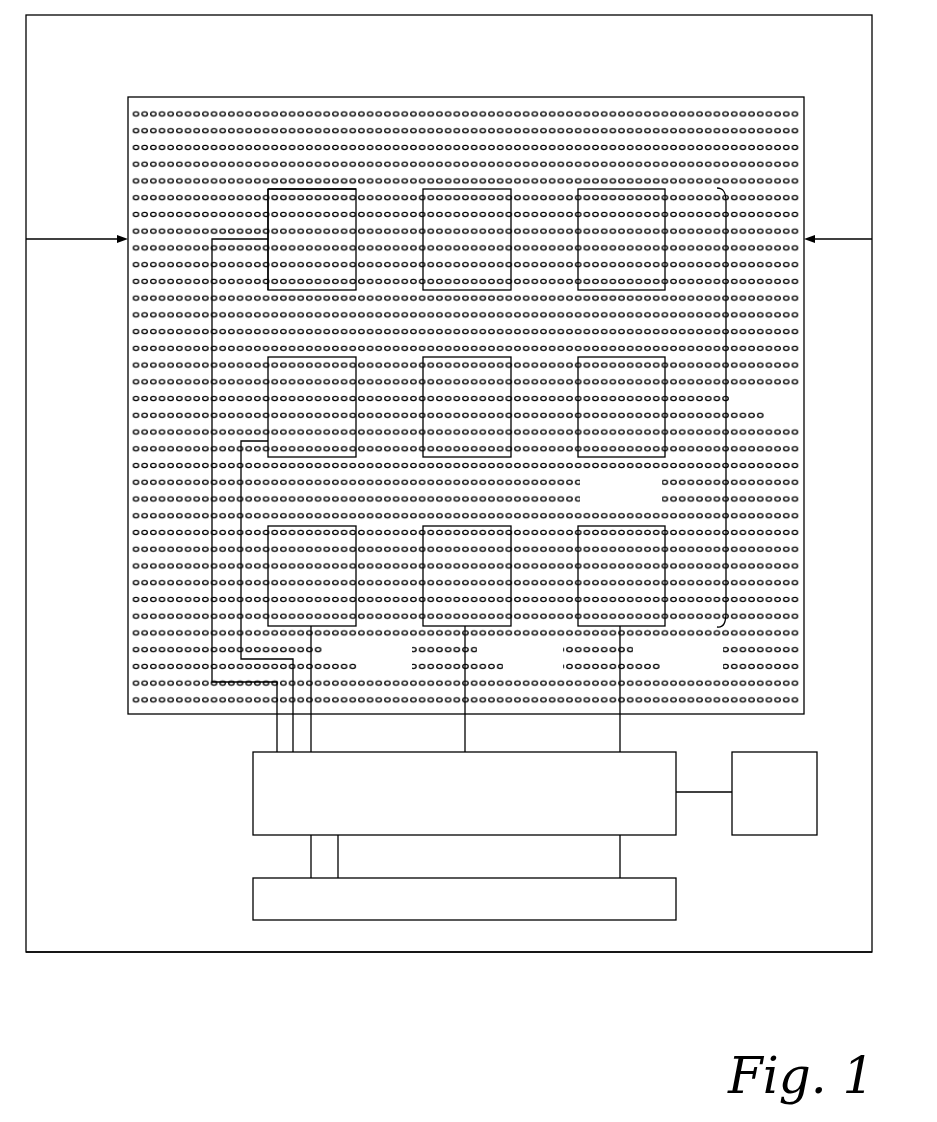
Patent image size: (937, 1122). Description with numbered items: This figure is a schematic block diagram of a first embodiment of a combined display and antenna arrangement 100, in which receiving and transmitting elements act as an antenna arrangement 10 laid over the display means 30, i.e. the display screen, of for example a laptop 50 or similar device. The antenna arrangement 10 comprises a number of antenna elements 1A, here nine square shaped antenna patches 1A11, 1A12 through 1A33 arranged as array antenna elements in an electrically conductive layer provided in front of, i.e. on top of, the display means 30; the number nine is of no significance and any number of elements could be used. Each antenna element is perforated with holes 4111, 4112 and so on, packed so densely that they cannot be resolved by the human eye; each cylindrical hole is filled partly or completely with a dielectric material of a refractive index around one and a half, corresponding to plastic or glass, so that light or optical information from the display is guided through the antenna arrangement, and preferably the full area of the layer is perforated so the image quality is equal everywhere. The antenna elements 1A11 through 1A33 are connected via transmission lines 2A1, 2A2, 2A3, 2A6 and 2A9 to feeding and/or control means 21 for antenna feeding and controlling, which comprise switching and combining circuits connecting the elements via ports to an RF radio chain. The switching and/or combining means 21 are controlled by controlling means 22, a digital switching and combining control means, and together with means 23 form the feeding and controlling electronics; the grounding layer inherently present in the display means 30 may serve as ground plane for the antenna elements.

The combined display and antenna arrangement 100 is at (118, 830).
The laptop 50 is at (417, 952).
The display means 30 is at (612, 98).
The antenna element 1A is at (468, 253).
The antenna arrangement 10 is at (727, 410).
The first antenna element 1A11 is at (300, 189).
The antenna element 1A12 is at (453, 189).
The antenna element 1A33 is at (598, 526).
The hole 4111 is at (268, 189).
The hole 4112 is at (277, 189).
The transmission line 2A1 is at (212, 645).
The transmission line 2A2 is at (248, 660).
The transmission line 2A3 is at (311, 674).
The transmission line 2A6 is at (466, 674).
The transmission line 2A9 is at (621, 674).
The switching and/or combining means 21 is at (254, 836).
The controlling means 22 is at (776, 836).
The means 23 is at (254, 898).